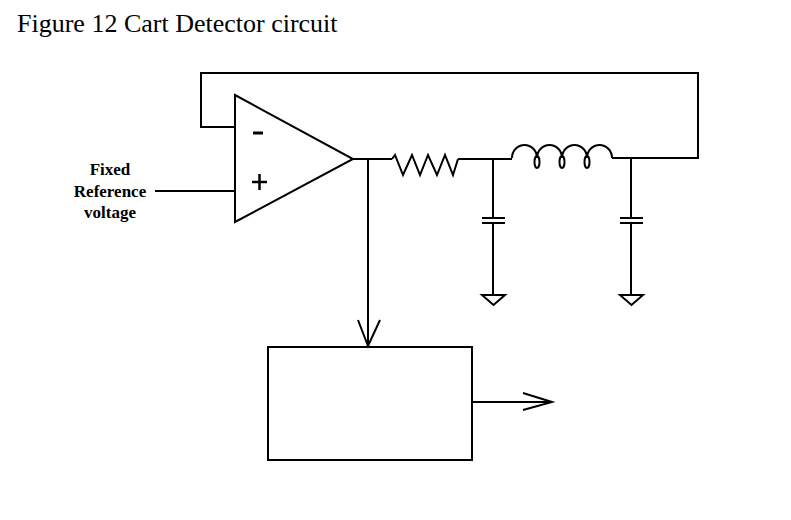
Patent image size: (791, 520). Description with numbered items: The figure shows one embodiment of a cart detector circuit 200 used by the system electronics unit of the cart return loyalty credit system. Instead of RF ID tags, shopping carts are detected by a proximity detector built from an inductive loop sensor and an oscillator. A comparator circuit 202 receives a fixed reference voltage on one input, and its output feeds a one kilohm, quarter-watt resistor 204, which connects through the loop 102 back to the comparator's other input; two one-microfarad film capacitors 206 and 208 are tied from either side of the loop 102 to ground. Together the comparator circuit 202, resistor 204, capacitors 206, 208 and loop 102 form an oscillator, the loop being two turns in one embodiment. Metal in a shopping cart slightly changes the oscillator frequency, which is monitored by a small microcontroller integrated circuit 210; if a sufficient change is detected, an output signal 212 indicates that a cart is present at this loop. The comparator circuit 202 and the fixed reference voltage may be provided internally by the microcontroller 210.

The cart detector circuit 200 is at (156, 287).
The comparator circuit 202 is at (290, 124).
The resistor 204 is at (413, 146).
The loop 102 is at (595, 143).
The film capacitor 206 is at (497, 226).
The film capacitor 208 is at (635, 226).
The microcontroller integrated circuit 210 is at (268, 398).
The output signal 212 is at (505, 403).